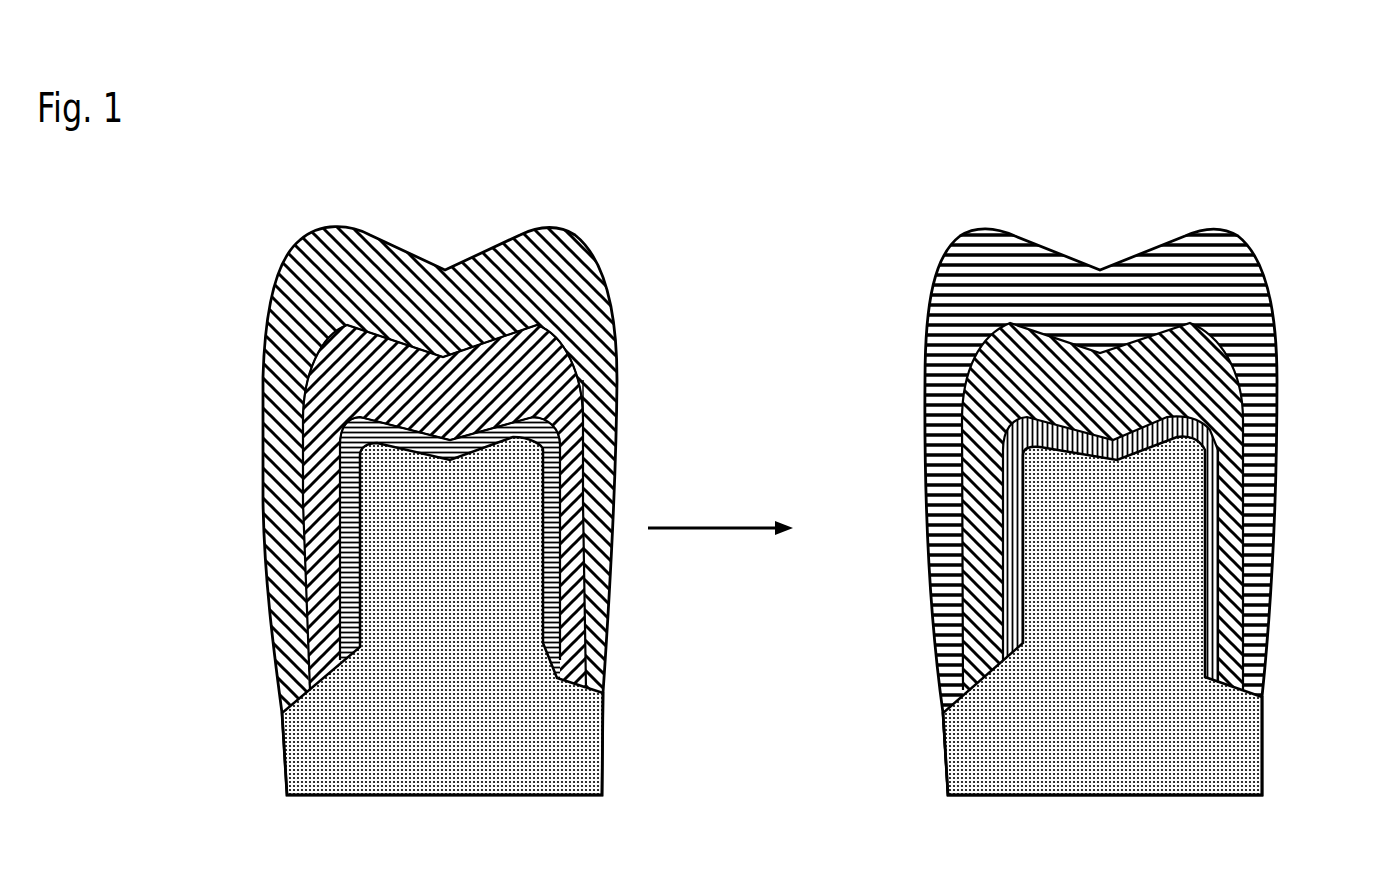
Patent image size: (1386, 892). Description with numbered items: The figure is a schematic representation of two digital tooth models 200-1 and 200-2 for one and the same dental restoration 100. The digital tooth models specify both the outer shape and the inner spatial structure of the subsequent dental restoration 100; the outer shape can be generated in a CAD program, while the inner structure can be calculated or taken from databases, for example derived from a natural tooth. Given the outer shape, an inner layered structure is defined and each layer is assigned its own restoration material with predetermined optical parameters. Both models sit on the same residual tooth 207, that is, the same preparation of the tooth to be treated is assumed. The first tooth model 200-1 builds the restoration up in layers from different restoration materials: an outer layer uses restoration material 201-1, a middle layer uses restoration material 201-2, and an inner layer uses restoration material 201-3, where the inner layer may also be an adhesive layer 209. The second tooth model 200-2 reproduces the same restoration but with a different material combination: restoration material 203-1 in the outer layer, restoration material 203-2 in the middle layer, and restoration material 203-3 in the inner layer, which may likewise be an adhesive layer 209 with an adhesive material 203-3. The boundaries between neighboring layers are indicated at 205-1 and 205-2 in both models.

The dental restoration 100 is at (183, 541).
The first digital tooth model 200-1 is at (428, 213).
The second digital tooth model 200-2 is at (1090, 213).
The restoration material of outer layer 201-1 is at (277, 378).
The restoration material of middle layer 201-2 is at (297, 440).
The restoration material of inner layer 201-3 is at (328, 507).
The restoration material of outer layer 203-1 is at (922, 362).
The restoration material of middle layer 203-2 is at (960, 410).
The adhesive material 203-3 is at (1003, 487).
The first interface 205-1 is at (543, 327).
The second interface 205-2 is at (385, 410).
The residual tooth 207 is at (353, 732).
The adhesive layer 209 is at (583, 400).